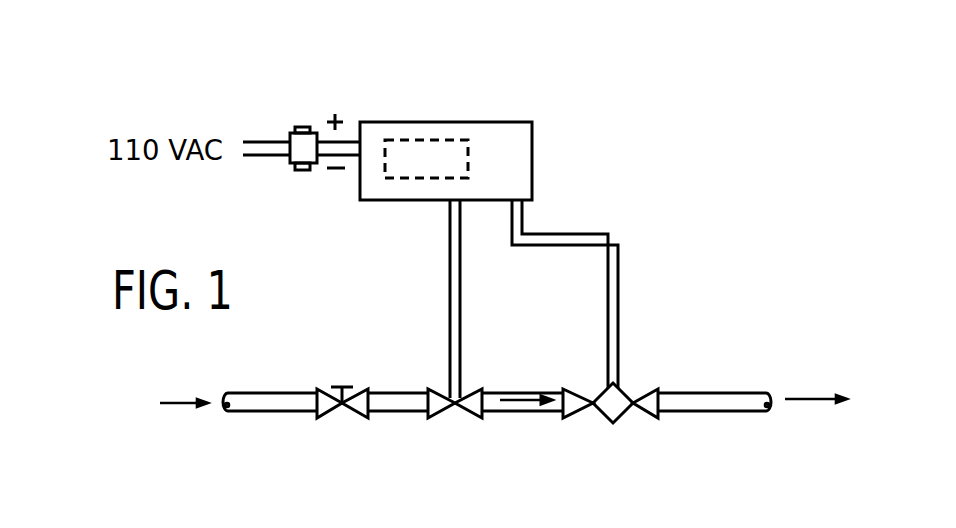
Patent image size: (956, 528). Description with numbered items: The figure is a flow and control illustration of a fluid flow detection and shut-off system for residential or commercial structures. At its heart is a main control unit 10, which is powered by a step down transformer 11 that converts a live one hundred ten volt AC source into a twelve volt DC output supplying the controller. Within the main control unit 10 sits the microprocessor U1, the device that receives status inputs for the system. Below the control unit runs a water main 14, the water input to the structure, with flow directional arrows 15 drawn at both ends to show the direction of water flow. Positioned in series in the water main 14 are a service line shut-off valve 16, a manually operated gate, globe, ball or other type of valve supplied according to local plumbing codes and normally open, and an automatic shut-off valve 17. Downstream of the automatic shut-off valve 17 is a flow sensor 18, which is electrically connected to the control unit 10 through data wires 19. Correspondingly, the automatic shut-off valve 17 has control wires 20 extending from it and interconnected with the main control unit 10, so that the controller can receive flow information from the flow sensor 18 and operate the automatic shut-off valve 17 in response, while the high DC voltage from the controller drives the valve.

The main control unit 10 is at (447, 127).
The microprocessor U1 is at (472, 160).
The step down transformer 11 is at (290, 140).
The water main 14 is at (393, 407).
The flow directional arrows 15 is at (778, 453).
The service line shut-off valve 16 is at (353, 408).
The automatic shut-off valve 17 is at (468, 410).
The flow sensor 18 is at (607, 410).
The data wires 19 is at (608, 278).
The control wires 20 is at (450, 273).